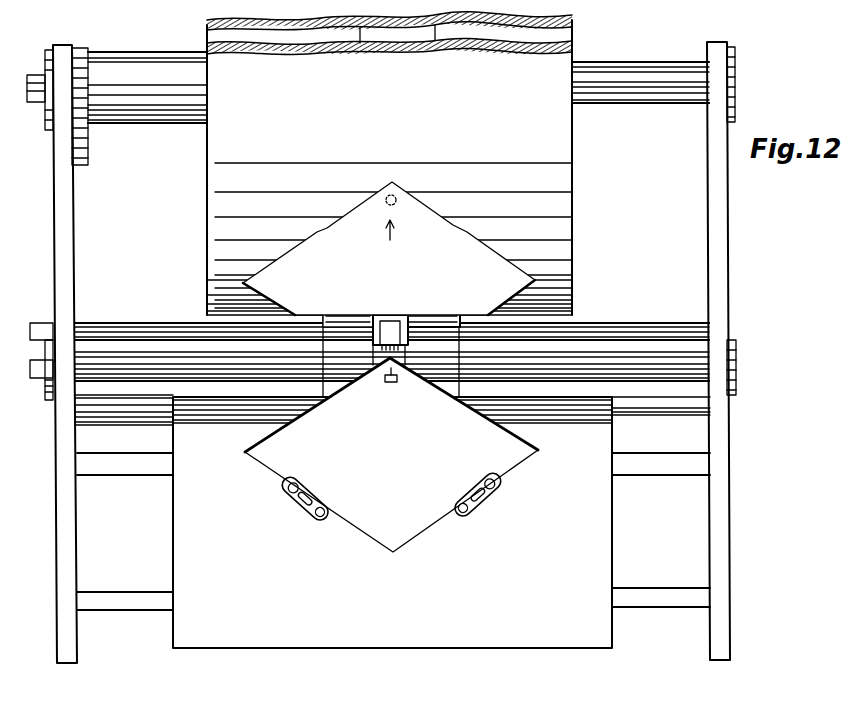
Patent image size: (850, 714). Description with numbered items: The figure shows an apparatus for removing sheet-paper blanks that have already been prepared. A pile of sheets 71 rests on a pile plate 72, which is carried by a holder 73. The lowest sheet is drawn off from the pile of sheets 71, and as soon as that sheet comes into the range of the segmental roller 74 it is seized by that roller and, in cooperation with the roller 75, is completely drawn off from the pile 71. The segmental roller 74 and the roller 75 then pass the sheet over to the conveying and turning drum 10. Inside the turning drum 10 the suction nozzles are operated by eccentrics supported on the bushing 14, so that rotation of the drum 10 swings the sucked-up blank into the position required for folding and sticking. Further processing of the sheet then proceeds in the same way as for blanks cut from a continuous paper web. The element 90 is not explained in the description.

The conveying and turning drum 10 is at (567, 135).
The bushing 14 is at (148, 118).
The pile of sheets 71 is at (397, 193).
The pile plate 72 is at (608, 518).
The holder 73 is at (314, 513).
The segmental roller 74 is at (441, 313).
The roller 75 is at (180, 413).
The indicator element 90 is at (385, 376).